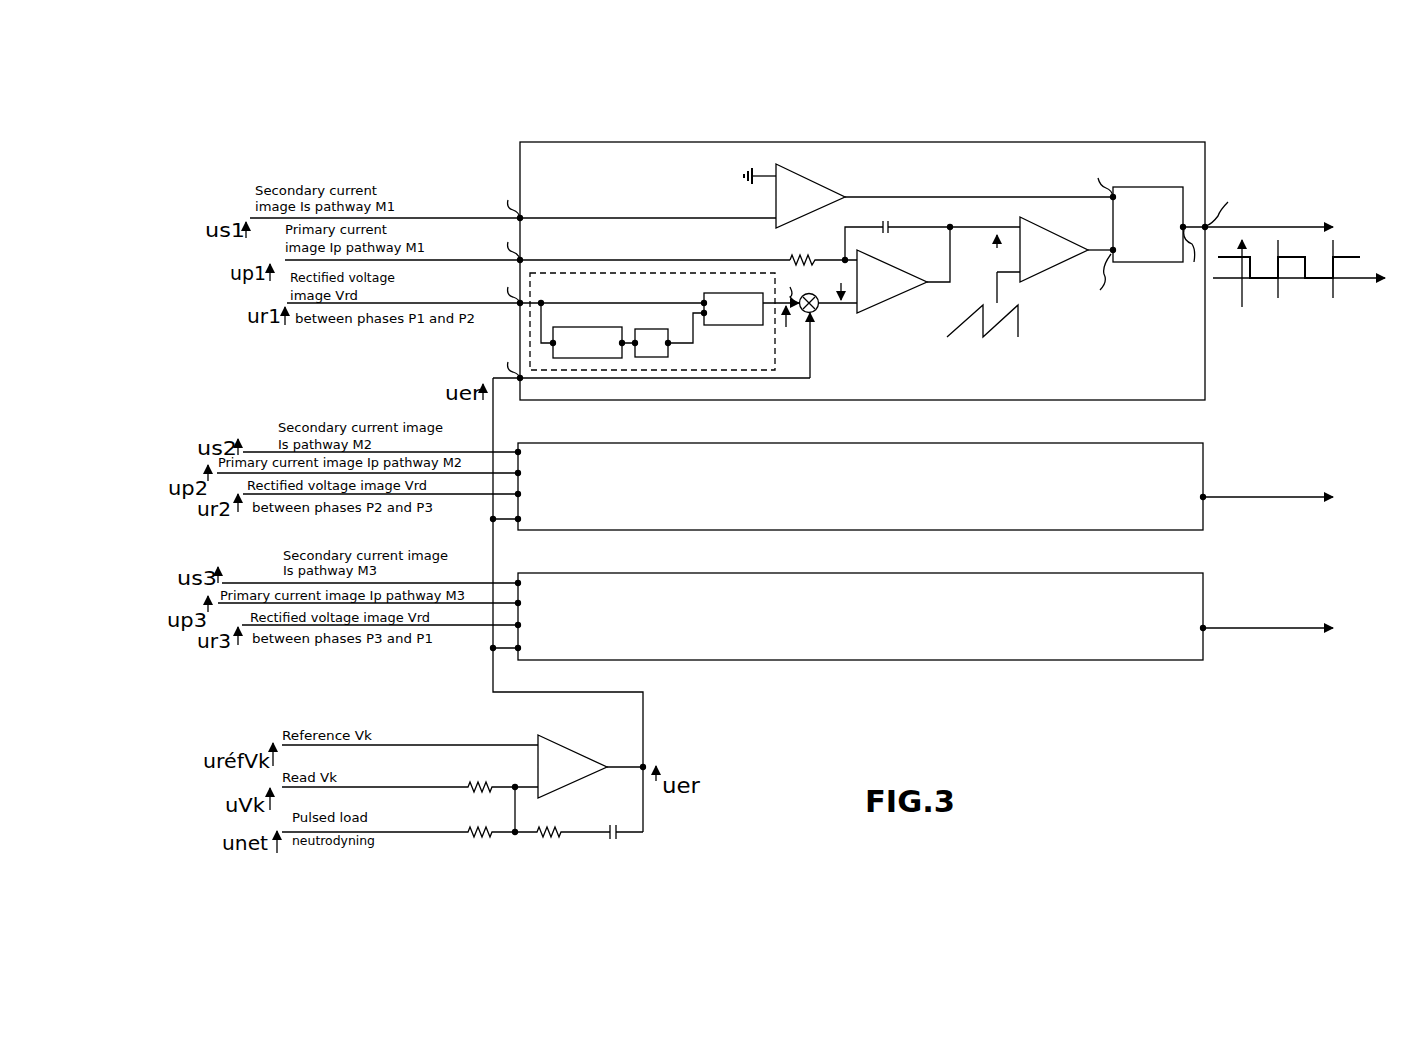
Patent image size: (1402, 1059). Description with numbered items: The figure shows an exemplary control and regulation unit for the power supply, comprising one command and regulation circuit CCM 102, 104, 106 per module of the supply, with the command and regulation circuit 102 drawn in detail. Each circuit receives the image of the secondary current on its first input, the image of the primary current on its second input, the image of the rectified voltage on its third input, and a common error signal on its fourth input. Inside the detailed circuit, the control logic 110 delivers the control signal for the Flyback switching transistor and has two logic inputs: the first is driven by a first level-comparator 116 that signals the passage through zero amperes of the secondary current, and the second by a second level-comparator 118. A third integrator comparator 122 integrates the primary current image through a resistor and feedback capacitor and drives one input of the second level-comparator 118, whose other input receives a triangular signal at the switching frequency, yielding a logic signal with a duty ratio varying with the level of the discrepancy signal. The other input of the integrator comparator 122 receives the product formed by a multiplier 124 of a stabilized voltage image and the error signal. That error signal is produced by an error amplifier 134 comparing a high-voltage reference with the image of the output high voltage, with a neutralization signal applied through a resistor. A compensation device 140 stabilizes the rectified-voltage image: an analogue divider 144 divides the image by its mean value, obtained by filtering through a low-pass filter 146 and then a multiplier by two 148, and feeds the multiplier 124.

The command and regulation circuit CCM 102 is at (1186, 143).
The command and regulation circuit CCM 104 is at (1176, 444).
The command and regulation circuit CCM 106 is at (1176, 574).
The control logic 110 is at (1144, 188).
The first level-comparator CMP 116 is at (812, 187).
The second level-comparator CMP 118 is at (1062, 268).
The third integrator comparator CMP 122 is at (874, 312).
The multiplier 124 is at (818, 308).
The error amplifier AMP 134 is at (556, 735).
The compensation device 140 is at (652, 351).
The analogue divider 144 is at (731, 327).
The low-pass FPB 146 is at (594, 326).
The multiplier by two 148 is at (656, 326).